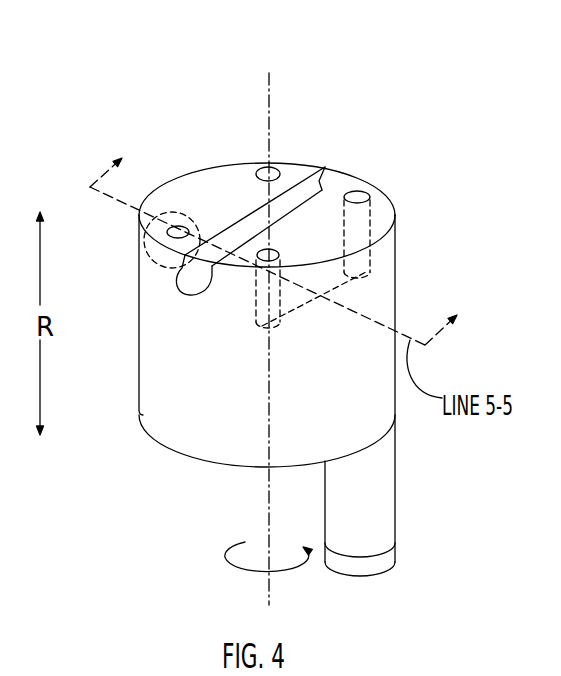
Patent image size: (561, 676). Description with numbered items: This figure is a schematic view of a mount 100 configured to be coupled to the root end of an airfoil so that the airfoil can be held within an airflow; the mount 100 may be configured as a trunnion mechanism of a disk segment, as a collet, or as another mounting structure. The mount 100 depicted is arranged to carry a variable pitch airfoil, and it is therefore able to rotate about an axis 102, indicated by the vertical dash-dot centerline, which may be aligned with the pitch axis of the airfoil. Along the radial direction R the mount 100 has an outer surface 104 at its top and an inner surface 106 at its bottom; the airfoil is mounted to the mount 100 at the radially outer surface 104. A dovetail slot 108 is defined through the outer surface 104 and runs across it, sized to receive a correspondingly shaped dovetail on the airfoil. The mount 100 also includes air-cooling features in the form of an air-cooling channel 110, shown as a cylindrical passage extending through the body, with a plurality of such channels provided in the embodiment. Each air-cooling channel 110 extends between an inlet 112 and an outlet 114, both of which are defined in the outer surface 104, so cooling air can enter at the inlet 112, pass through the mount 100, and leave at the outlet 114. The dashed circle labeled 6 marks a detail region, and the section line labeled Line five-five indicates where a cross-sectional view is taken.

The mount 100 is at (418, 183).
The axis 102 is at (270, 108).
The outer surface 104 is at (211, 182).
The inner surface 106 is at (228, 472).
The dovetail slot 108 is at (195, 295).
The air-cooling channel 110 is at (368, 281).
The inlet 112 is at (246, 254).
The outlet 114 is at (351, 184).
The detail view circle 6 is at (142, 270).